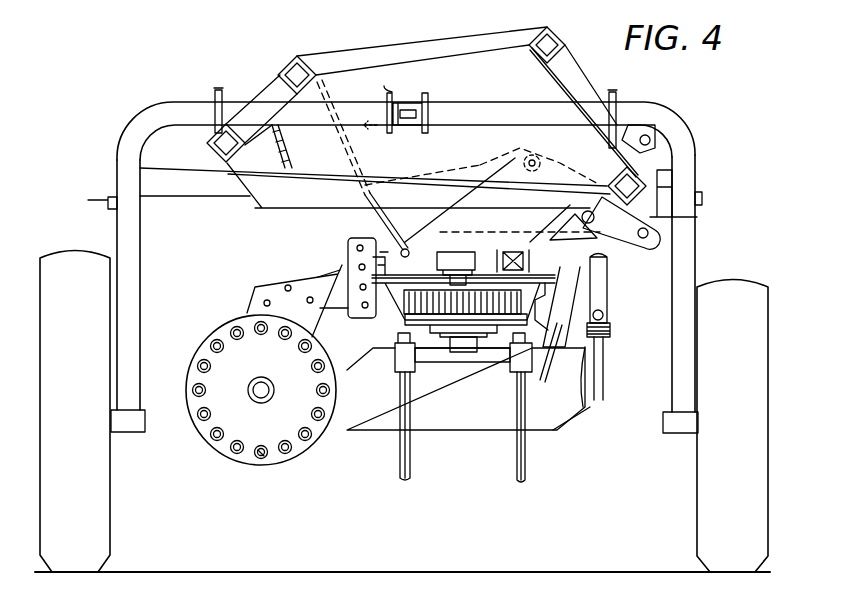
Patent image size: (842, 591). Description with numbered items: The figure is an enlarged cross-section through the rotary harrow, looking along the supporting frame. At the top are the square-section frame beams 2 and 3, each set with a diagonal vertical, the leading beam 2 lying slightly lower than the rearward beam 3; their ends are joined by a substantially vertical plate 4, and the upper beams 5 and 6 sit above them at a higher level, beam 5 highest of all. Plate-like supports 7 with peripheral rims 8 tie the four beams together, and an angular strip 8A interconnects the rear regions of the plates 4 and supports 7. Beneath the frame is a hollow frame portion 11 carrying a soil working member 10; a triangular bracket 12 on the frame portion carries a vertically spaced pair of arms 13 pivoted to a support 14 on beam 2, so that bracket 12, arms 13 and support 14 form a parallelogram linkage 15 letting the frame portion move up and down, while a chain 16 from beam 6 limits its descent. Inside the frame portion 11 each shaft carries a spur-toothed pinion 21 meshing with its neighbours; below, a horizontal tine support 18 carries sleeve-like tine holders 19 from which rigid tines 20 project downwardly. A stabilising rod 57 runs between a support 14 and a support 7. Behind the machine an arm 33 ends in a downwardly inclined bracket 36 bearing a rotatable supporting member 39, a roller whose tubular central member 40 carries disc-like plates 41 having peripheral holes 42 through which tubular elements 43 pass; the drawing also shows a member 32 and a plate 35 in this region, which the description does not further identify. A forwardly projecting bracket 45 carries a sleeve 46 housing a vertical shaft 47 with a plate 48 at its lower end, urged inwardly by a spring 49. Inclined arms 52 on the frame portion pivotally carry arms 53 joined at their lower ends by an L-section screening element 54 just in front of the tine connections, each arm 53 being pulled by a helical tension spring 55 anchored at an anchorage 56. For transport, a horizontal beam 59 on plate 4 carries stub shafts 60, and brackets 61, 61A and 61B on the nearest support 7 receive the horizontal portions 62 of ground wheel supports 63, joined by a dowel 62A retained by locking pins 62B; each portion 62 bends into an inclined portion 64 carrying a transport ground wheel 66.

The frame beam 2 is at (670, 190).
The frame beam 3 is at (206, 148).
The vertical plate 4 is at (266, 202).
The further frame beam 5 is at (566, 36).
The further frame beam 6 is at (287, 60).
The plate-like support 7 is at (366, 82).
The perpendicular rim 8 is at (516, 42).
The angular cross-section strip 8A is at (290, 150).
The soil working member 10 is at (476, 372).
The hollow frame portion 11 is at (385, 302).
The bracket 12 is at (515, 170).
The arm 13 is at (548, 192).
The support 14 is at (676, 216).
The parallelogram linkage 15 is at (670, 196).
The chain 16 is at (360, 180).
The tine support 18 is at (450, 362).
The tine holder 19 is at (396, 362).
The tine 20 is at (412, 476).
The spur-toothed pinion 21 is at (412, 310).
The connecting rod 32 is at (382, 207).
The arm 33 is at (337, 268).
The mounting plate 35 is at (352, 244).
The bracket 36 is at (272, 285).
The rotatable supporting member 39 is at (198, 449).
The tubular central supporting member 40 is at (250, 392).
The disc-like plate 41 is at (232, 315).
The hole 42 is at (262, 447).
The tubular element 43 is at (298, 347).
The bracket 45 is at (607, 292).
The sleeve 46 is at (604, 315).
The shaft 47 is at (604, 373).
The plate 48 is at (365, 432).
The spring 49 is at (612, 333).
The arm 52 is at (600, 207).
The arm 53 is at (583, 409).
The screening element 54 is at (548, 372).
The helical tension spring 55 is at (485, 244).
The anchorage 56 is at (410, 254).
The stabilising rod 57 is at (514, 250).
The horizontal beam 59 is at (176, 198).
The stub shaft 60 is at (94, 200).
The bracket 61 is at (620, 78).
The bracket 61A is at (219, 88).
The bracket 61B is at (434, 96).
The horizontal portion 62 is at (236, 104).
The dowel 62A is at (376, 132).
The locking pin 62B is at (424, 93).
The ground wheel support 63 is at (162, 106).
The inclined portion 64 is at (142, 278).
The transport ground wheel 66 is at (108, 508).